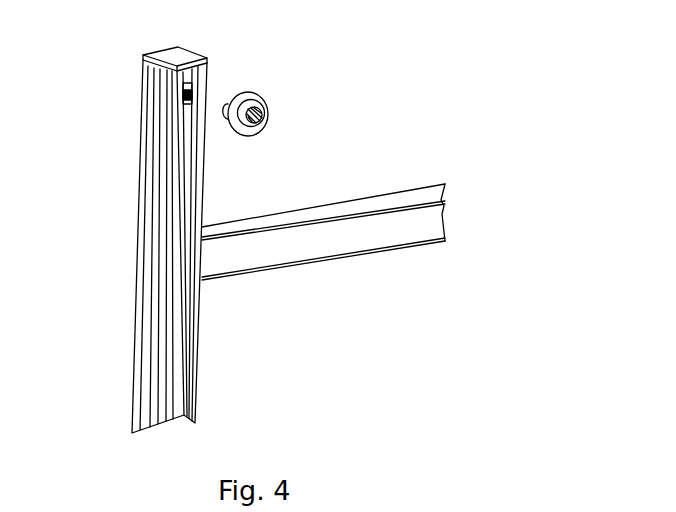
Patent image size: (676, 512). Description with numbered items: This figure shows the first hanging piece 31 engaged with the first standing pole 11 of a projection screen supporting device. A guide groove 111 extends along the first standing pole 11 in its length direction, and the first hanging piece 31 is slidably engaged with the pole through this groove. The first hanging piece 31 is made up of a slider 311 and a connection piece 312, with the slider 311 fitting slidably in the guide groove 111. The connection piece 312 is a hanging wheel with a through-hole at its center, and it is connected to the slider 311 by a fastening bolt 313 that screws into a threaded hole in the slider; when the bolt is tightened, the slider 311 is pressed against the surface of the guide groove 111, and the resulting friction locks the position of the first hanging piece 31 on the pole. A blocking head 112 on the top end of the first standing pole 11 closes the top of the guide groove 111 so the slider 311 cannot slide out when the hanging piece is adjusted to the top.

The first standing pole 11 is at (156, 173).
The guide groove 111 is at (188, 173).
The blocking head 112 is at (172, 57).
The first hanging piece 31 is at (324, 82).
The slider 311 is at (193, 83).
The connection piece 312 is at (267, 93).
The fastening bolt 313 is at (262, 118).